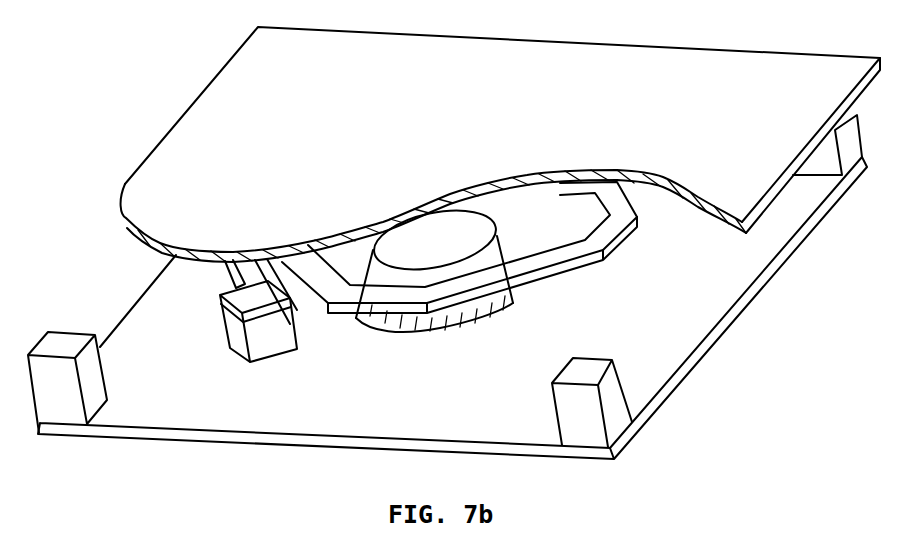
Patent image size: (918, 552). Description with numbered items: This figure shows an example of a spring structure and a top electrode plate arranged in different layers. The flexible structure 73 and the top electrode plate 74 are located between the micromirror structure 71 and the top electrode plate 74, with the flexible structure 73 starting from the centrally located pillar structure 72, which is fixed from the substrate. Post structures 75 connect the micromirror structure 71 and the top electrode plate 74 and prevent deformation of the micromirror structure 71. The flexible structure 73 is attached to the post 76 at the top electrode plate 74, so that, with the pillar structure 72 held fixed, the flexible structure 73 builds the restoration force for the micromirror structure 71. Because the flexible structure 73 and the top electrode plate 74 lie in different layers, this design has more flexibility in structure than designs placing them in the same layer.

The micromirror structure 71 is at (763, 158).
The pillar structure 72 is at (432, 240).
The flexible structure 73 is at (505, 275).
The top electrode plate 74 is at (642, 333).
The post structures 75 is at (613, 385).
The post 76 is at (223, 323).